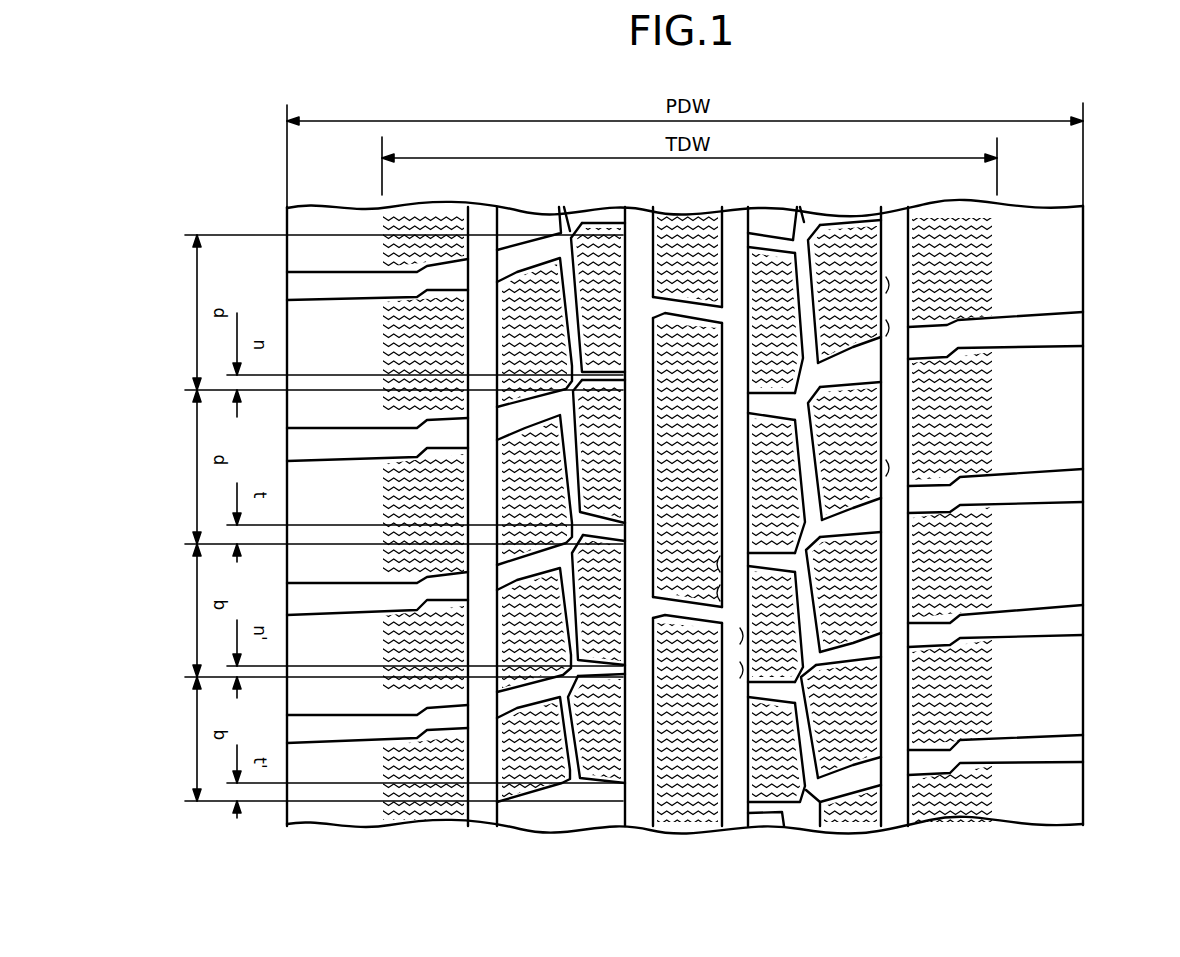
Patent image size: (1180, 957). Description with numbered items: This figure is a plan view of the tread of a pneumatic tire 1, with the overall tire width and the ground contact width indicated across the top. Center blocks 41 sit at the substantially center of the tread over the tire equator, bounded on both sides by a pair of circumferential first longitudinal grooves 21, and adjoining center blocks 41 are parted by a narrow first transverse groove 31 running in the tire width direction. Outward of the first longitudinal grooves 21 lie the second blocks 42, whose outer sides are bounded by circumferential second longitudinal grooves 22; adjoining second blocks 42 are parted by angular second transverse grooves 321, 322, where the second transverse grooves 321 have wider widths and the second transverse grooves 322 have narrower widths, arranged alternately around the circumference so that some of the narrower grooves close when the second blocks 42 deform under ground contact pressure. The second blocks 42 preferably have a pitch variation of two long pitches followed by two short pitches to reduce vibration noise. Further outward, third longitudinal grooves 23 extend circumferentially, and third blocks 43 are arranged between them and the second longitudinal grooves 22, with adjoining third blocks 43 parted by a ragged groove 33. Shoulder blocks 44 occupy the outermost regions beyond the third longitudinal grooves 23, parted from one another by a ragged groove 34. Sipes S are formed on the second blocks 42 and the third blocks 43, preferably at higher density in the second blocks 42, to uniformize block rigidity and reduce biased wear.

The pneumatic tire 1 is at (1110, 180).
The first longitudinal groove 21 is at (638, 818).
The second longitudinal groove 22 is at (810, 813).
The third longitudinal groove 23 is at (897, 813).
The first transverse groove 31 is at (675, 308).
The second transverse groove 321 is at (770, 410).
The second transverse groove 322 is at (770, 240).
The ragged groove 33 is at (853, 363).
The ragged groove 34 is at (1073, 327).
The center block 41 is at (697, 822).
The second block 42 is at (775, 800).
The third block 43 is at (849, 735).
The shoulder block 44 is at (1073, 223).
The sipe S is at (884, 506).